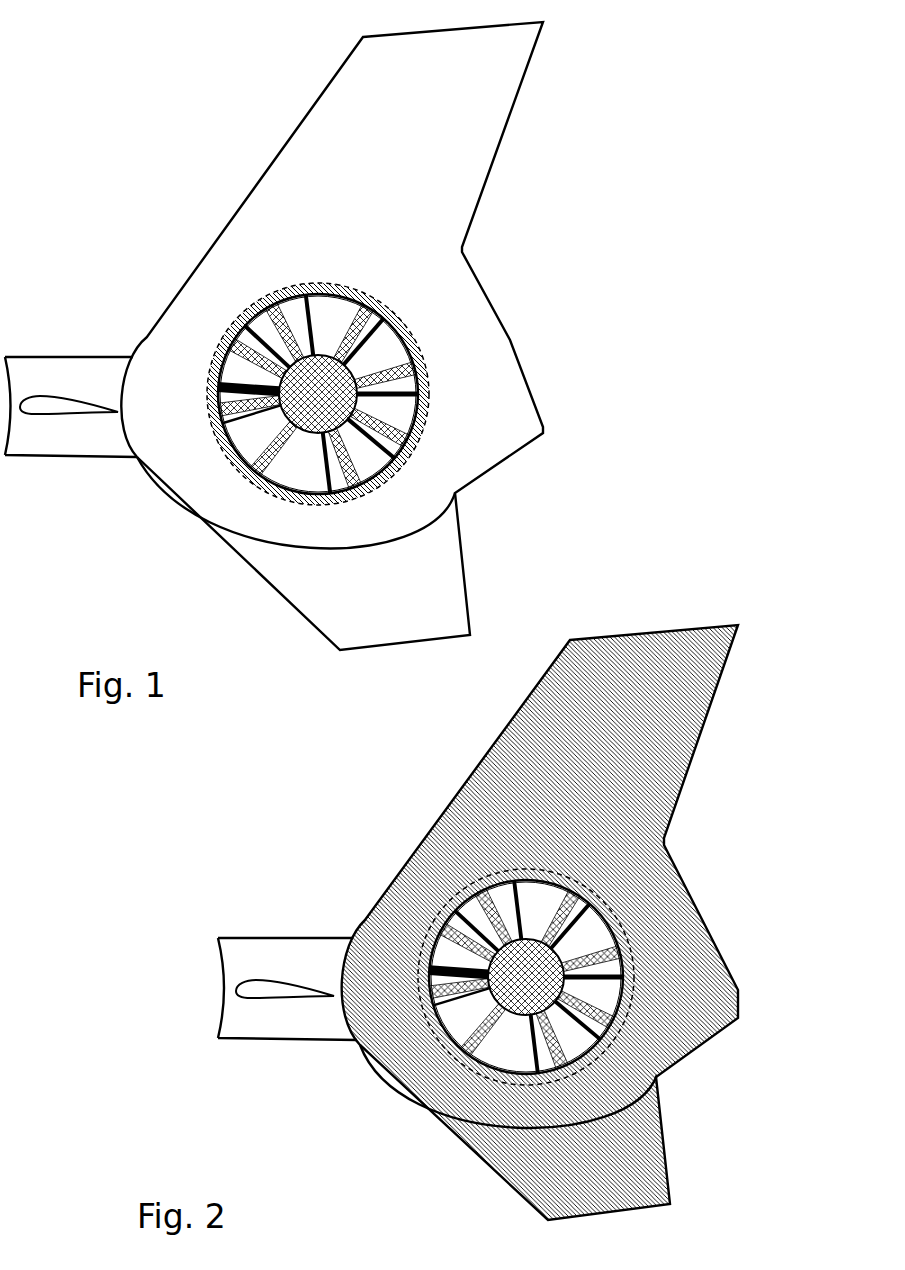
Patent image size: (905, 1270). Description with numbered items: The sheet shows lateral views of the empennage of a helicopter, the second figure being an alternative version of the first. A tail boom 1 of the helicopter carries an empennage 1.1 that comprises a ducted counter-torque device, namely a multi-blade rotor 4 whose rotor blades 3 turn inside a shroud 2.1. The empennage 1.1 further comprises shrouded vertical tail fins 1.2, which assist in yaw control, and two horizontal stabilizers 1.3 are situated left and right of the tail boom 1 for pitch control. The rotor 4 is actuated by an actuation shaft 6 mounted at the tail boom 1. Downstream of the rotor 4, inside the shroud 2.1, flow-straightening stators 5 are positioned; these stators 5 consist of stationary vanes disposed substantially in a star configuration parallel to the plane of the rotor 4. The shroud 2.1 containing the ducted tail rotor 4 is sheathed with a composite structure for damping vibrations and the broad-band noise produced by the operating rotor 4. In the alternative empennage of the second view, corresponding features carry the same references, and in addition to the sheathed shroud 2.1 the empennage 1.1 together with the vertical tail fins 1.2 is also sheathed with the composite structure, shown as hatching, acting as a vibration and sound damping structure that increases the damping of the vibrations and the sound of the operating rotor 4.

In FIG. 1, the tail boom 1 is at (228, 158).
In FIG. 2, the tail boom 1 is at (384, 850).
In FIG. 1, the empennage 1.1 is at (270, 517).
In FIG. 2, the empennage 1.1 is at (674, 1022).
In FIG. 1, the vertical tail fins 1.2 is at (480, 78).
In FIG. 2, the vertical tail fins 1.2 is at (656, 759).
In FIG. 1, the horizontal stabilizers 1.3 is at (55, 413).
In FIG. 2, the horizontal stabilizers 1.3 is at (287, 989).
In FIG. 1, the shroud 2.1 is at (223, 450).
In FIG. 2, the shroud 2.1 is at (447, 1027).
In FIG. 1, the rotor blades 3 is at (415, 368).
In FIG. 2, the rotor blades 3 is at (613, 977).
In FIG. 1, the rotor 4 is at (337, 403).
In FIG. 2, the rotor 4 is at (545, 970).
In FIG. 1, the flow-straightening stators 5 is at (315, 307).
In FIG. 2, the flow-straightening stators 5 is at (526, 977).
In FIG. 1, the actuation shaft 6 is at (203, 371).